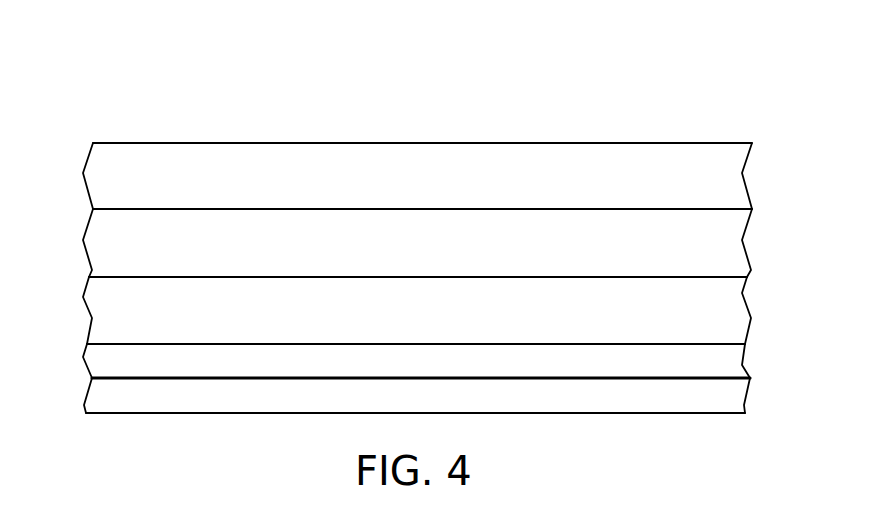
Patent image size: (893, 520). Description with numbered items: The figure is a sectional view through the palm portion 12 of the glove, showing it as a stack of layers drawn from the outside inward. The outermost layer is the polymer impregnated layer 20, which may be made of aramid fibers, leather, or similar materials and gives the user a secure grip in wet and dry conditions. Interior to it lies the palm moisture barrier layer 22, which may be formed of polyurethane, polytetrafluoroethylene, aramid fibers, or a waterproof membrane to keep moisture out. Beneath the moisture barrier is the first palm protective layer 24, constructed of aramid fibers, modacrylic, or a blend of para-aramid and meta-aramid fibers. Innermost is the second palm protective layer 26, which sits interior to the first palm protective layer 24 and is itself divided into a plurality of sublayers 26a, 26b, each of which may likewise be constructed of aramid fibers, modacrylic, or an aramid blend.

The palm portion 12 is at (85, 97).
The polymer impregnated layer 20 is at (97, 163).
The palm moisture barrier layer 22 is at (97, 229).
The first palm protective layer 24 is at (98, 311).
The second palm protective layer 26 is at (80, 344).
The sublayer 26a is at (737, 364).
The sublayer 26b is at (737, 394).